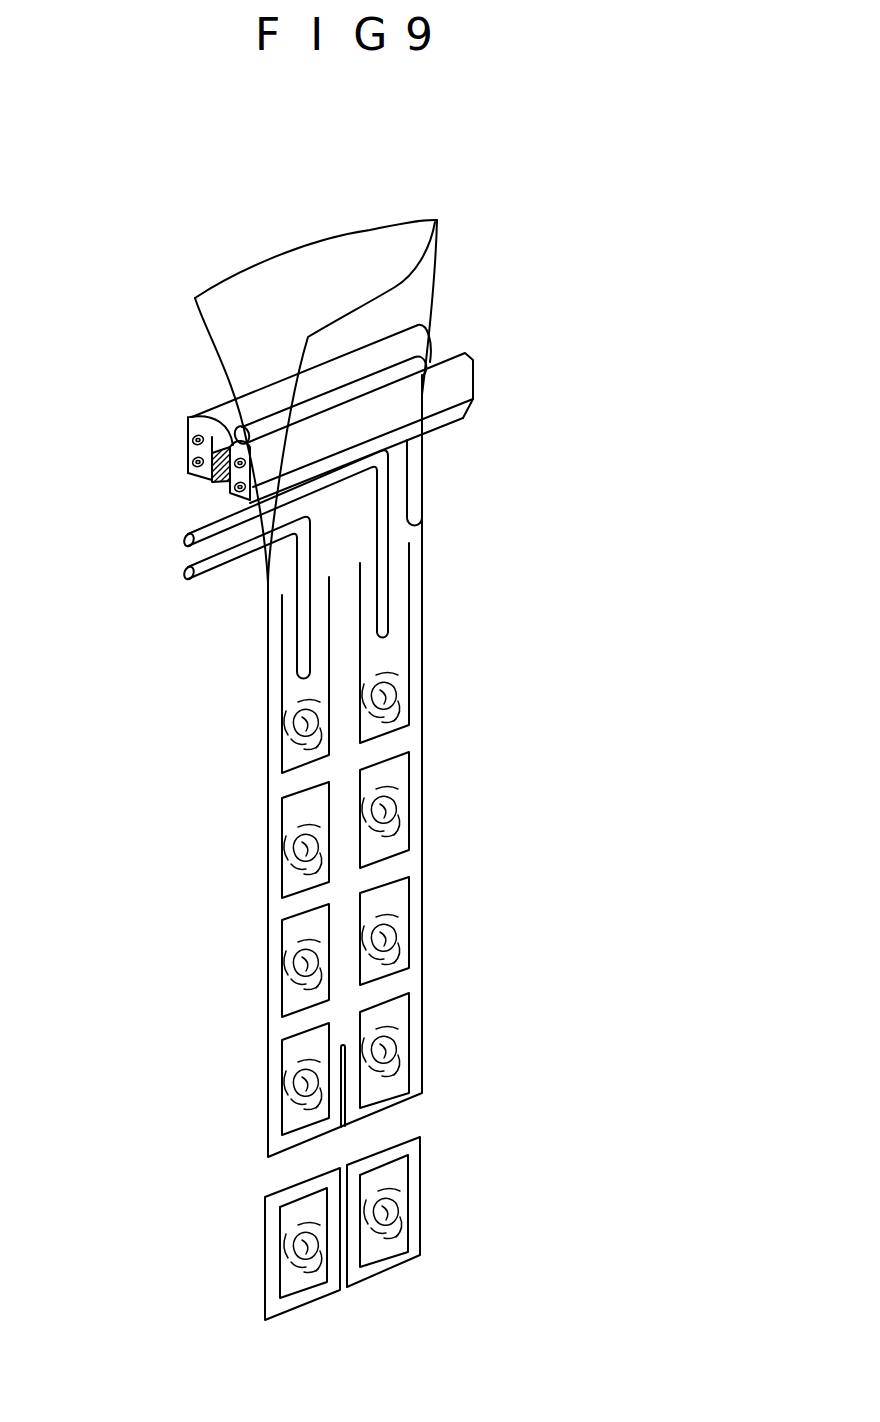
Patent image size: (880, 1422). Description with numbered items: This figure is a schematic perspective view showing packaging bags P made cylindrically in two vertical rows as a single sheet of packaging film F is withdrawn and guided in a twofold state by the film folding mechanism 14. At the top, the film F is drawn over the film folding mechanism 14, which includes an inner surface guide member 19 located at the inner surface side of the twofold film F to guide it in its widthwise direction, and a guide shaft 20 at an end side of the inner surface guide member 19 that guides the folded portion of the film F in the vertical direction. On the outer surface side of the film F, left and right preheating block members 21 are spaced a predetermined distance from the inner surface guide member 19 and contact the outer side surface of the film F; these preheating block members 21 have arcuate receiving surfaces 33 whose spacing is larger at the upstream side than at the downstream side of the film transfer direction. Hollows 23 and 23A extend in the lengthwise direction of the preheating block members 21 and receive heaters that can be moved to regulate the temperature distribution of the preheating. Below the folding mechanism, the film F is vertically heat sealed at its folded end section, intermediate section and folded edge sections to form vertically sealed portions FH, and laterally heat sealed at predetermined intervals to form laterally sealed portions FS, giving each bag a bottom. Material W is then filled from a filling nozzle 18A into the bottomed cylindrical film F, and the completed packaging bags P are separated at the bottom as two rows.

The film folding mechanism 14 is at (142, 368).
The film F is at (415, 282).
The arcuate receiving surfaces 33 is at (221, 426).
The preheating block members 21 is at (460, 406).
The hollows 23 is at (190, 443).
The hollow 23A is at (190, 462).
The inner surface guide member 19 is at (217, 481).
The guide shaft 20 is at (418, 466).
The filling nozzle 18A is at (305, 611).
The vertically sealed portions FH is at (420, 636).
The laterally sealed portions FS is at (387, 743).
The material W is at (403, 1008).
The packaging bags P is at (208, 1207).